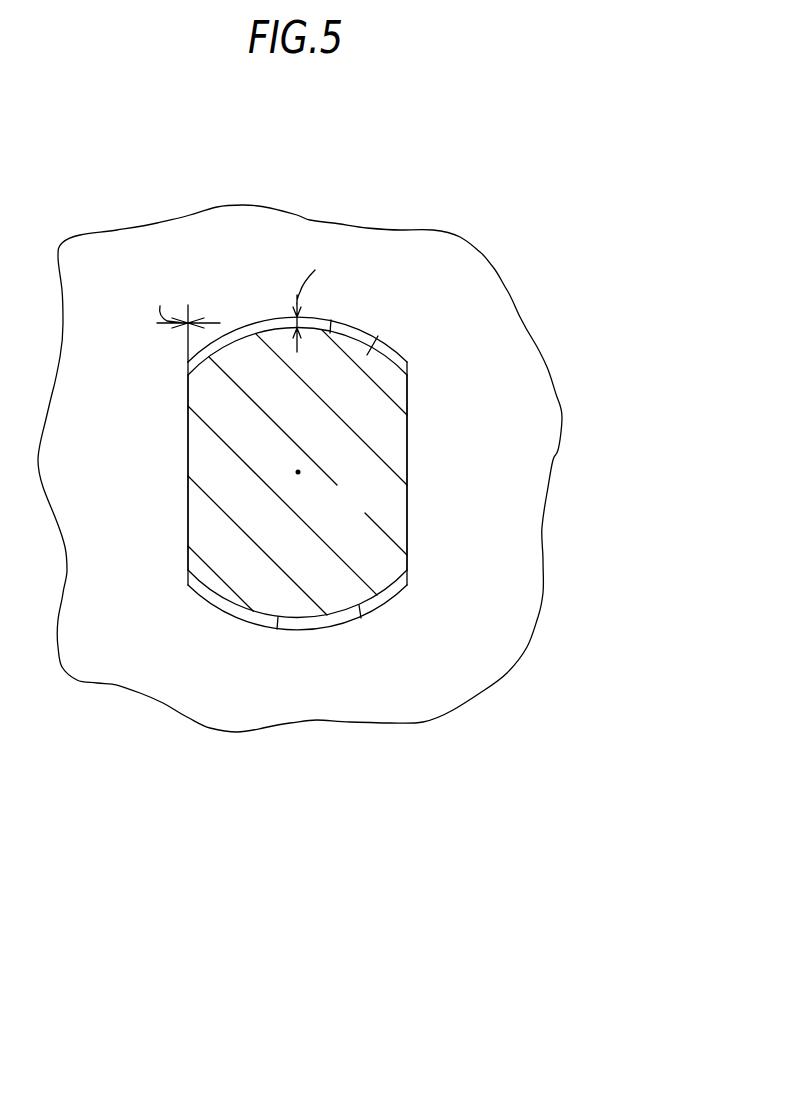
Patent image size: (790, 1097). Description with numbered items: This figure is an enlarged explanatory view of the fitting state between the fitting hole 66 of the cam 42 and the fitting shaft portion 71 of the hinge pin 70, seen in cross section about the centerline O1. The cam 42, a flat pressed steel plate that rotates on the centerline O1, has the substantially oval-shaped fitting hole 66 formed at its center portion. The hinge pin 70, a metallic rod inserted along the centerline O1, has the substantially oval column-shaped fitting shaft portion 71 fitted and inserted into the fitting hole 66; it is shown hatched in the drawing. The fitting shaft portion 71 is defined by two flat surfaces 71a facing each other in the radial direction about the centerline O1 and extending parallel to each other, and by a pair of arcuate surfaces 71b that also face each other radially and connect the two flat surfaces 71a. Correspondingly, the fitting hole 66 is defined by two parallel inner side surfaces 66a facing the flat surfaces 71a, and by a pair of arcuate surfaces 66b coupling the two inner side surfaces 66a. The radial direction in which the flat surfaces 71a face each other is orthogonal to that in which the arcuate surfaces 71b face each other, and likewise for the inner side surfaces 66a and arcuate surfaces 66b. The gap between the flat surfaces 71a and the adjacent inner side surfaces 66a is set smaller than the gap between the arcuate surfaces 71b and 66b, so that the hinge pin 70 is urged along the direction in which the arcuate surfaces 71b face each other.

The cam 42 is at (530, 517).
The fitting hole 66 is at (297, 473).
The inner side surface 66a is at (190, 525).
The arcuate surface 66b is at (318, 331).
The hinge pin 70 is at (295, 479).
The fitting shaft portion 71 is at (294, 479).
The flat surface 71a is at (407, 403).
The arcuate surface 71b is at (368, 332).
The centerline O1 is at (298, 472).